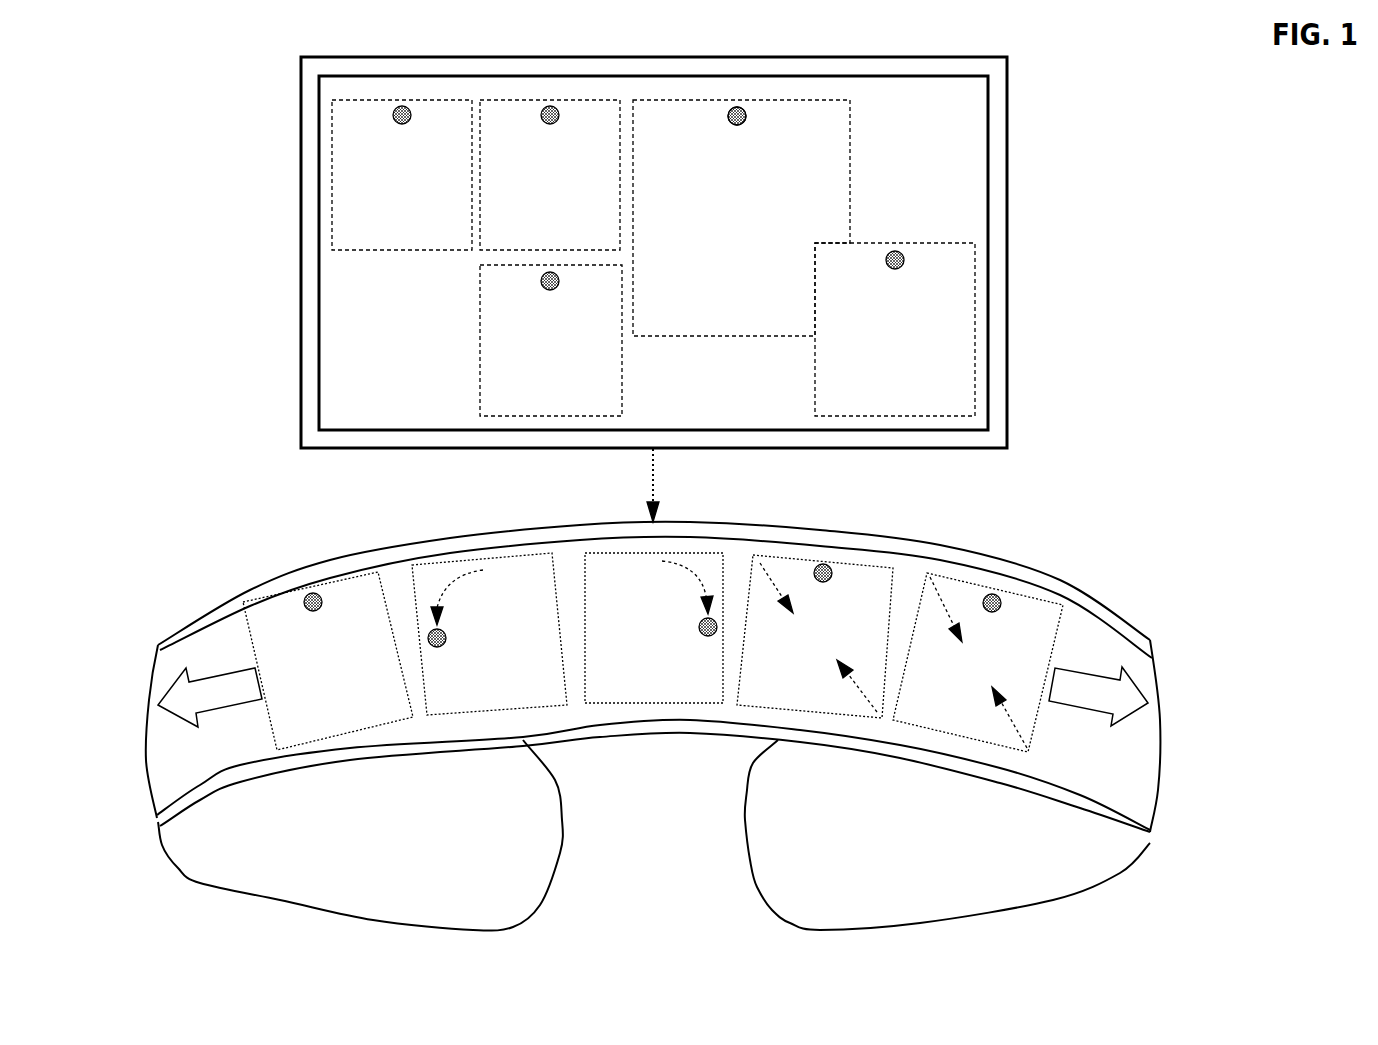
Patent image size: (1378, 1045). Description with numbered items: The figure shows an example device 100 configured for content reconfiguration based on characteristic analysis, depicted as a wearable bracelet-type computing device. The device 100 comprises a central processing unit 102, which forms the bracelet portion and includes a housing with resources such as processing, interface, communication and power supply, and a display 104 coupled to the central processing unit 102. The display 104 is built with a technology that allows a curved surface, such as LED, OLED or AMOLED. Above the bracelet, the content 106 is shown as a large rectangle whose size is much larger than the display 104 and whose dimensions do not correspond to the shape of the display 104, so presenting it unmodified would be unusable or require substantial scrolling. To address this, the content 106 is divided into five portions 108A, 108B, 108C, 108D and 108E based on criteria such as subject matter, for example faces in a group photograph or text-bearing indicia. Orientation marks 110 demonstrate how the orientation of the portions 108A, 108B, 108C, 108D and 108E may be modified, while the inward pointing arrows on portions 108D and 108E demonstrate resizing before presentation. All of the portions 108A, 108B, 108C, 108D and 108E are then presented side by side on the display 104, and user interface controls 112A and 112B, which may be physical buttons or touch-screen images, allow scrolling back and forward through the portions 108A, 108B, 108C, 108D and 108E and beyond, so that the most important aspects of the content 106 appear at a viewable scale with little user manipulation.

The device 100 is at (601, 726).
The central processing unit 102 is at (158, 645).
The display 104 is at (146, 730).
The content 106 is at (300, 138).
The portion 108A is at (425, 186).
The portion 108B is at (572, 186).
The portion 108C is at (572, 351).
The portion 108D is at (765, 226).
The portion 108E is at (920, 341).
The orientation marks 110 is at (747, 116).
The user interface control 112A is at (248, 701).
The user interface control 112B is at (1107, 701).